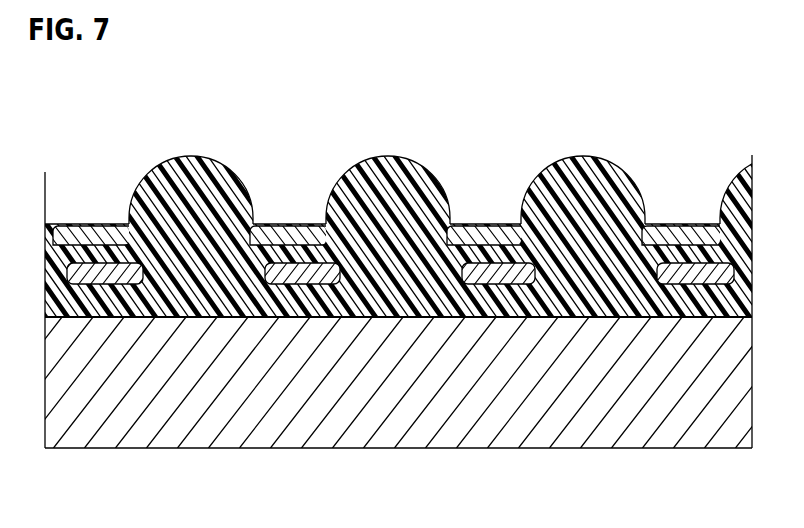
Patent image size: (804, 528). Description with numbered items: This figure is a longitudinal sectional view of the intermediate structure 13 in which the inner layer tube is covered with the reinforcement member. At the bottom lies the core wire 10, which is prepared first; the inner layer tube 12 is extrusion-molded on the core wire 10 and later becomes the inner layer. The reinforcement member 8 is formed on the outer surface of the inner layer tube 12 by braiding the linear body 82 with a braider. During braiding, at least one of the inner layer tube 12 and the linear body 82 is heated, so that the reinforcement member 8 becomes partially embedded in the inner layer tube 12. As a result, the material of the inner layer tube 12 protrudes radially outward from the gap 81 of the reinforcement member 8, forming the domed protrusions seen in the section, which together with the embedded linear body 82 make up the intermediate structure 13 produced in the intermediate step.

The core wire 10 is at (370, 428).
The intermediate structure 13 is at (97, 167).
The inner layer tube 12 is at (363, 157).
The reinforcement member 8 is at (398, 190).
The gap 81 is at (440, 217).
The linear body 82 is at (318, 270).